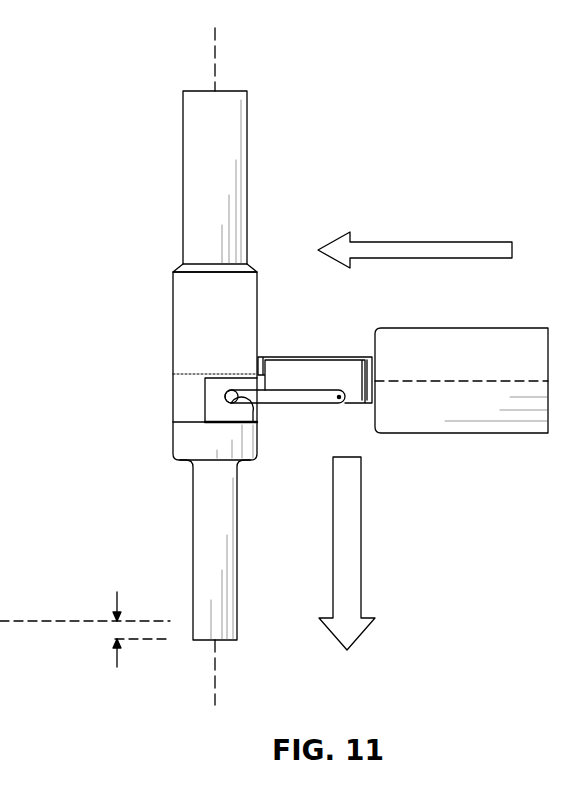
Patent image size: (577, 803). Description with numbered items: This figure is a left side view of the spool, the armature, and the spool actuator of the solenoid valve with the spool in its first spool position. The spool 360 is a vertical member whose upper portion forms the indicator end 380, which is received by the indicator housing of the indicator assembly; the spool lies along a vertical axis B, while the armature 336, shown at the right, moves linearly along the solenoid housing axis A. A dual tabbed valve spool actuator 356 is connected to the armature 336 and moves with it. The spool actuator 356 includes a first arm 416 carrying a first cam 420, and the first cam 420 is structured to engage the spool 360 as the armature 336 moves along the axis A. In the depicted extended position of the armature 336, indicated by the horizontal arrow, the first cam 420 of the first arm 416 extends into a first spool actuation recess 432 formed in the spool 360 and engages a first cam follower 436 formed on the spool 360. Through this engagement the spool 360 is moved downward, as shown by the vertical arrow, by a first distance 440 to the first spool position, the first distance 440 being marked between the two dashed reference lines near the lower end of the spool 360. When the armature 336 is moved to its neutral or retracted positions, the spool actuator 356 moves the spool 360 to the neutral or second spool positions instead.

The longitudinal axis B is at (217, 67).
The indicator end 380 is at (232, 138).
The first spool actuation recess 432 is at (183, 393).
The first cam follower 436 is at (240, 412).
The first arm 416 is at (273, 402).
The first cam 420 is at (233, 390).
The dual tabbed valve spool actuator 356 is at (325, 368).
The armature 336 is at (490, 345).
The solenoid housing axis A is at (475, 382).
The spool 360 is at (222, 573).
The first distance 440 is at (117, 660).